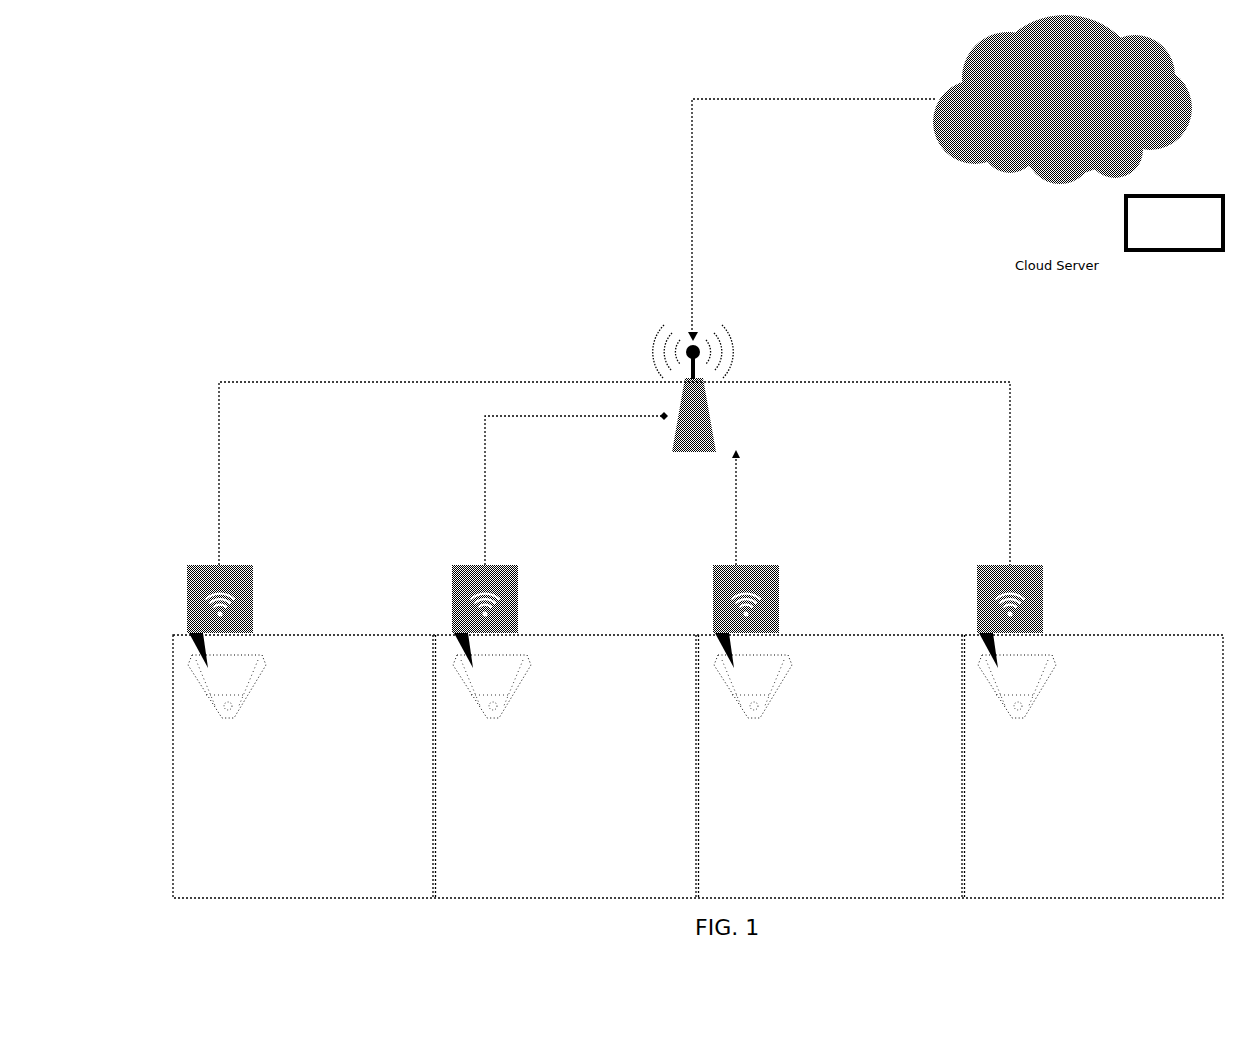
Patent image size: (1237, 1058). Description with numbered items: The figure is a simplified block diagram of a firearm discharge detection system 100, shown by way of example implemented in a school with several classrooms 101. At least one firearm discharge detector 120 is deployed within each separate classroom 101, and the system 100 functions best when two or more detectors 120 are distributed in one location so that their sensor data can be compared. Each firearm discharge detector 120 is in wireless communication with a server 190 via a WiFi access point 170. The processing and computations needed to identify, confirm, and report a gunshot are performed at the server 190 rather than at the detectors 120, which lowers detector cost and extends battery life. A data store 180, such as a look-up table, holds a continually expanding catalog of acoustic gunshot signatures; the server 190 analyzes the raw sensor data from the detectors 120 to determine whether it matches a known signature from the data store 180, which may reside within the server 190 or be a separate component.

The firearm discharge detection system 100 is at (194, 160).
The classroom 101 is at (322, 856).
The firearm discharge detector 120 is at (182, 683).
The WiFi access point 170 is at (661, 404).
The data store 180 is at (1193, 229).
The server 190 is at (1081, 111).